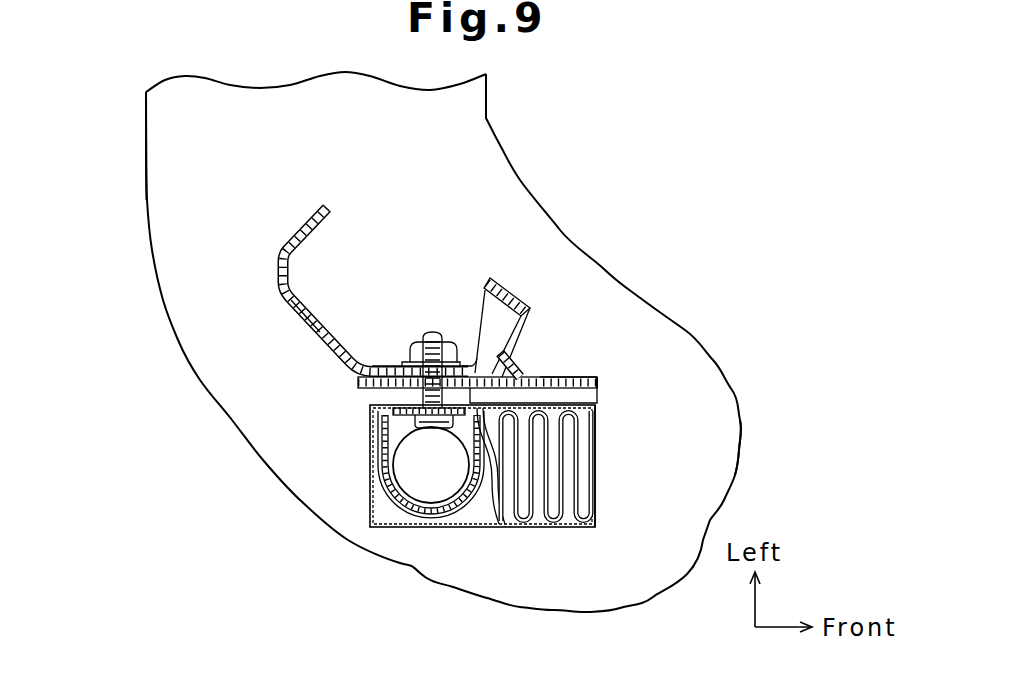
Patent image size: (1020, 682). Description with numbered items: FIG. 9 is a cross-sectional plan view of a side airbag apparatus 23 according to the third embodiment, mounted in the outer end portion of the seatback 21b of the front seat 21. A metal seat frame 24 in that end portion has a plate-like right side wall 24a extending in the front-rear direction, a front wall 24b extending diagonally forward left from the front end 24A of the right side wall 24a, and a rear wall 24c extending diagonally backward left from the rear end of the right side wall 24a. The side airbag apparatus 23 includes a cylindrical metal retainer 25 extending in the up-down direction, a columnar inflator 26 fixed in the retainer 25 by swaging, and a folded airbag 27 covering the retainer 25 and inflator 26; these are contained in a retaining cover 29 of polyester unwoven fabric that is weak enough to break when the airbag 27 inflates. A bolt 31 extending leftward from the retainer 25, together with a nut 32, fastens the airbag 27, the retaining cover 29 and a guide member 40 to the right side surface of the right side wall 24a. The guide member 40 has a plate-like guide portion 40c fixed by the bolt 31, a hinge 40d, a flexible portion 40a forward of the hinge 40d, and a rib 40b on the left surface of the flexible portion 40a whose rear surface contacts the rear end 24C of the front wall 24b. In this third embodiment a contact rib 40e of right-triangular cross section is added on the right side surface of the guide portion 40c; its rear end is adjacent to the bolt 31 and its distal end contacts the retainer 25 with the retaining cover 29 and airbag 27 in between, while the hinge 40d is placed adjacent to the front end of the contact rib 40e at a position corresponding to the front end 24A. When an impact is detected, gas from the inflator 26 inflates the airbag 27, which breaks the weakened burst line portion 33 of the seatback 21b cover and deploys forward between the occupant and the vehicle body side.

The front seat 21 is at (146, 138).
The seatback 21b is at (146, 209).
The side airbag apparatus 23 is at (350, 462).
The seat frame 24 is at (279, 272).
The right side wall 24a is at (380, 366).
The front wall 24b is at (498, 326).
The rear wall 24c is at (300, 304).
The front end 24A is at (464, 370).
The rear end 24C is at (530, 340).
The retainer 25 is at (472, 500).
The inflator 26 is at (437, 493).
The airbag 27 is at (548, 520).
The retaining cover 29 is at (590, 522).
The bolt 31 is at (428, 342).
The nut 32 is at (426, 332).
The burst line portion 33 is at (737, 467).
The guide member 40 is at (362, 389).
The flexible portion 40a is at (597, 381).
The rib 40b is at (536, 370).
The guide portion 40c is at (565, 366).
The hinge 40d is at (478, 396).
The contact rib 40e is at (457, 420).